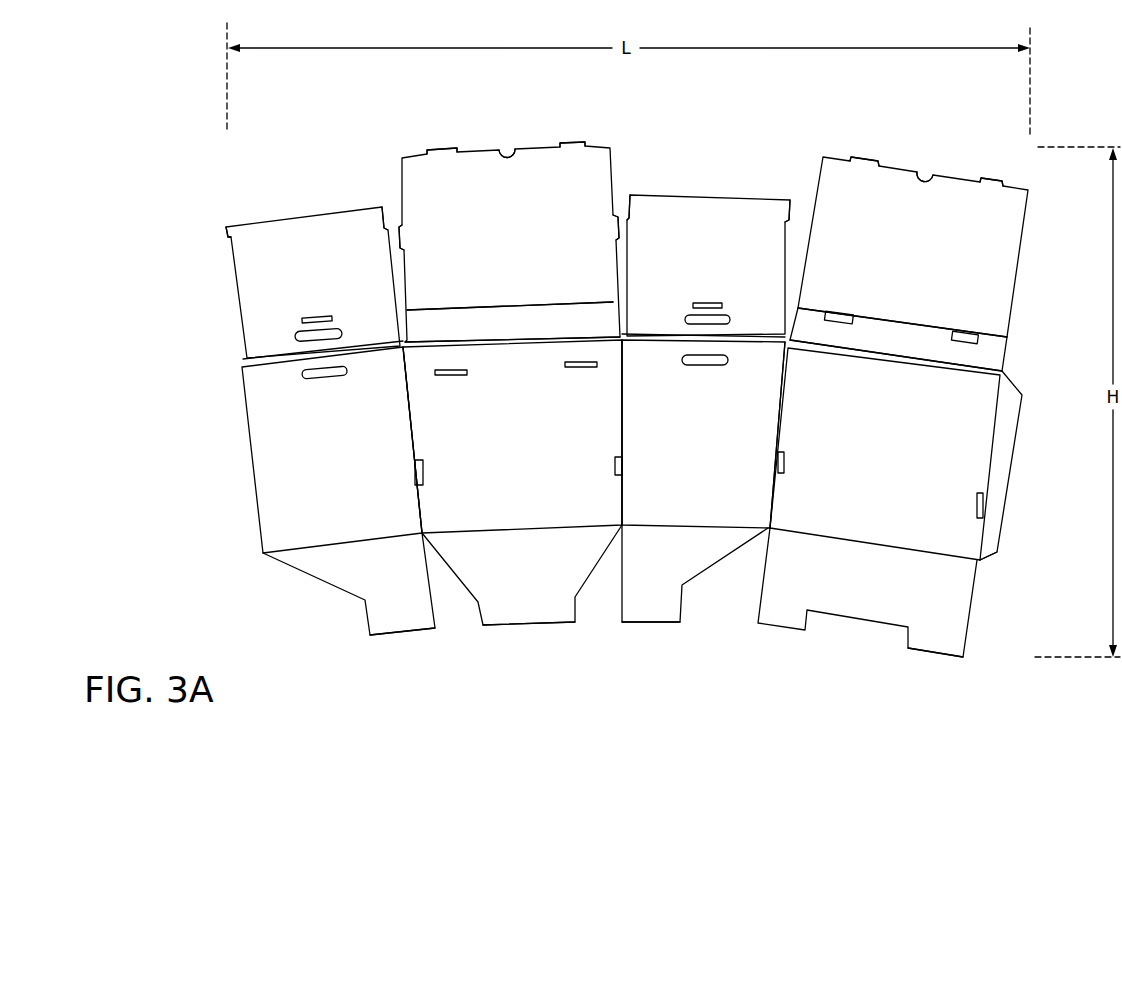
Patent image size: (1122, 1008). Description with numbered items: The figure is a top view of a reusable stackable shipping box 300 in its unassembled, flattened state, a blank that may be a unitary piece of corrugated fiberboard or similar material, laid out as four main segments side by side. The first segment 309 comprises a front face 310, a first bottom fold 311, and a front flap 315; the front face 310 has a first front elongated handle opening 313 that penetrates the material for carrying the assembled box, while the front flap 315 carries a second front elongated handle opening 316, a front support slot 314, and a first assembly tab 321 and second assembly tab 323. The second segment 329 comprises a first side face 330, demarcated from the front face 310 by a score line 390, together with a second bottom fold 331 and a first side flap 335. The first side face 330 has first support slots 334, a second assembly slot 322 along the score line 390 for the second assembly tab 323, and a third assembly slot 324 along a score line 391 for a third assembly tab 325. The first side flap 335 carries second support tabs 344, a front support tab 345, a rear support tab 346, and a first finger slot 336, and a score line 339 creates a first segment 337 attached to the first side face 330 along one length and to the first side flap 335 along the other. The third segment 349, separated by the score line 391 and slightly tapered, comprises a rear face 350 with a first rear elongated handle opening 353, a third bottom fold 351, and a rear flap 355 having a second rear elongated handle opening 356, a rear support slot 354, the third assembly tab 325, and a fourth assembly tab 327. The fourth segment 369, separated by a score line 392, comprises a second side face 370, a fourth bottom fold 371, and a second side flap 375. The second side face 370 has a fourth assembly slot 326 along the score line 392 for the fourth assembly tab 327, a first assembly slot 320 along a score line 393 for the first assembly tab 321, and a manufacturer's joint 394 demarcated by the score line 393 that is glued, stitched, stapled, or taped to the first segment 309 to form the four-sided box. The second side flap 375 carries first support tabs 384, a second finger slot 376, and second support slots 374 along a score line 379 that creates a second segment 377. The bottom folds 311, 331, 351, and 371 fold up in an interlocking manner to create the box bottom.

The box 300 is at (235, 556).
The first segment 309 is at (333, 633).
The front face 310 is at (308, 485).
The first bottom fold 311 is at (381, 588).
The first front elongated handle opening 313 is at (312, 377).
The front support slot 314 is at (304, 316).
The front flap 315 is at (296, 275).
The second front elongated handle opening 316 is at (340, 330).
The first assembly slot 320 is at (977, 498).
The first assembly tab 321 is at (225, 228).
The second assembly slot 322 is at (424, 462).
The second assembly tab 323 is at (381, 206).
The third assembly slot 324 is at (614, 462).
The third assembly tab 325 is at (633, 196).
The fourth assembly slot 326 is at (785, 458).
The fourth assembly tab 327 is at (788, 200).
The second segment 329 is at (513, 633).
The first side face 330 is at (503, 478).
The second bottom fold 331 is at (513, 581).
The first support slots 334 is at (450, 376).
The first side flap 335 is at (493, 232).
The first finger slot 336 is at (507, 150).
The first segment of first side flap 337 is at (532, 327).
The score line 339 is at (482, 306).
The second support tabs 344 is at (442, 150).
The front support tab 345 is at (400, 233).
The rear support tab 346 is at (618, 230).
The third segment 349 is at (712, 625).
The rear face 350 is at (686, 450).
The third bottom fold 351 is at (654, 562).
The first rear elongated handle opening 353 is at (705, 365).
The rear support slot 354 is at (715, 303).
The rear flap 355 is at (694, 250).
The second rear elongated handle opening 356 is at (690, 314).
The fourth segment 369 is at (856, 652).
The second side face 370 is at (868, 472).
The fourth bottom fold 371 is at (861, 588).
The second support slots 374 is at (840, 313).
The second side flap 375 is at (904, 242).
The second finger slot 376 is at (926, 172).
The second segment of second side flap 377 is at (864, 341).
The score line 379 is at (925, 326).
The first support tabs 384 is at (864, 158).
The score line 390 is at (404, 398).
The score line 391 is at (623, 512).
The score line 392 is at (773, 515).
The score line 393 is at (980, 556).
The manufacturer's joint 394 is at (1008, 466).